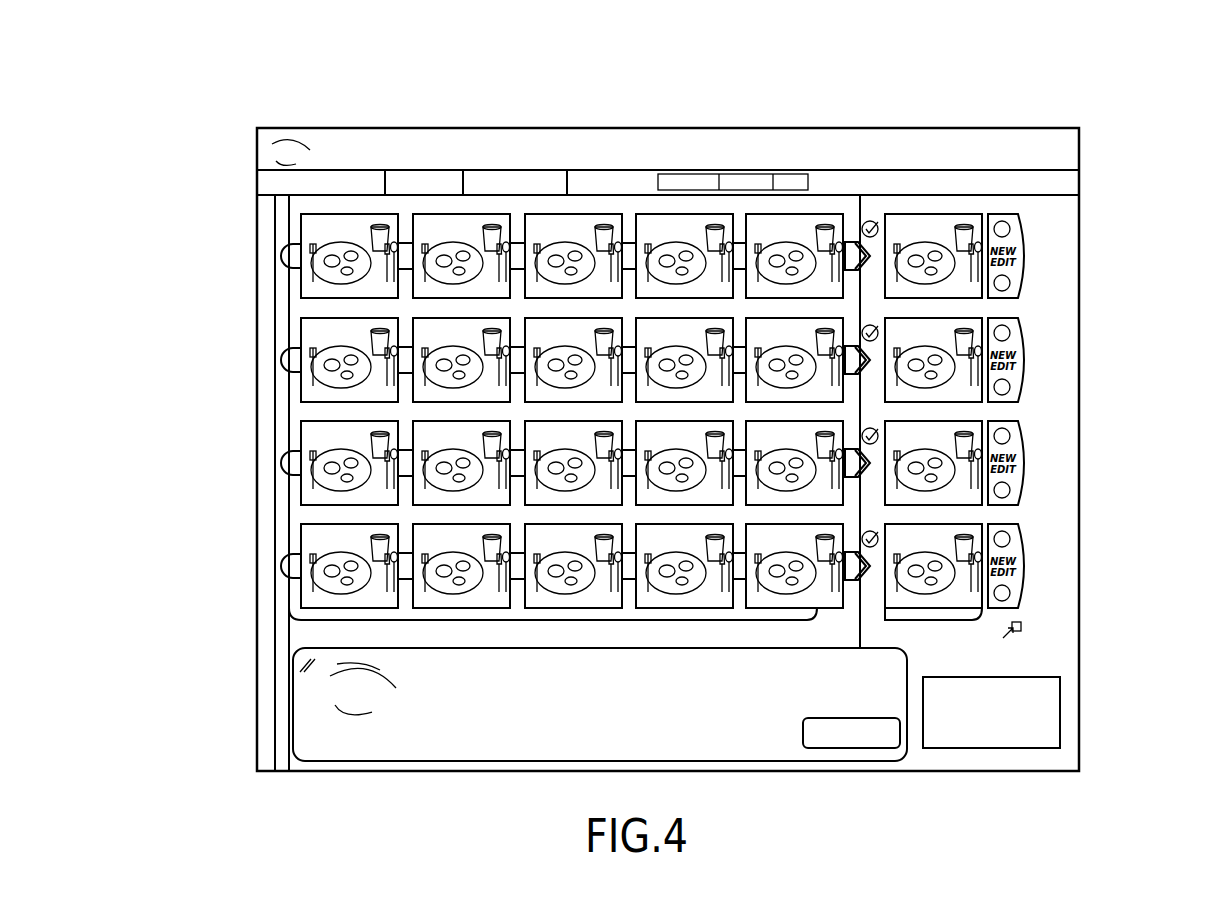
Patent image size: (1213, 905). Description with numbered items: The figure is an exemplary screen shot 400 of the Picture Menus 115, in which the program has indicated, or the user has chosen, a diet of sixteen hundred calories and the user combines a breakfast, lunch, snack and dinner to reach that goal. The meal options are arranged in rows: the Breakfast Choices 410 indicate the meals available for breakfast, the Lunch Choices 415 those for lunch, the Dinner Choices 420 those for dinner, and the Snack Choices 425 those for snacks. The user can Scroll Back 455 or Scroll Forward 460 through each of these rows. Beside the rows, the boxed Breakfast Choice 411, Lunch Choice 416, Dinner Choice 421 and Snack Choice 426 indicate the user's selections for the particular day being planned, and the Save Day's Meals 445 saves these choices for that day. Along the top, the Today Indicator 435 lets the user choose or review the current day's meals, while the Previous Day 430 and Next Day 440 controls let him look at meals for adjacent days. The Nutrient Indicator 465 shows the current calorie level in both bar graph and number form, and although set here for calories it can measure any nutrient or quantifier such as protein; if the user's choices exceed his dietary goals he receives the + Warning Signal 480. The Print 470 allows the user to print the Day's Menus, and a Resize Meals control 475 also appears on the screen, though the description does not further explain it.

The screen shot 400 is at (1167, 83).
The Picture Menus 115 is at (283, 208).
The Breakfast Choices 410 is at (257, 258).
The Lunch Choices 415 is at (257, 365).
The Dinner Choices 420 is at (257, 467).
The Snack Choices 425 is at (257, 568).
The Breakfast Choice 411 is at (977, 237).
The Lunch Choice 416 is at (977, 340).
The Dinner Choice 421 is at (977, 444).
The Snack Choice 426 is at (977, 547).
The Previous Day 430 is at (337, 172).
The Today Indicator 435 is at (428, 173).
The Next Day 440 is at (480, 173).
The Save Day's Meals 445 is at (305, 727).
The Scroll Back 455 is at (295, 566).
The Scroll Forward 460 is at (850, 567).
The Nutrient Indicator 465 is at (733, 182).
The Print 470 is at (1060, 720).
The resize meals control 475 is at (1050, 610).
The + Warning Signal 480 is at (822, 180).